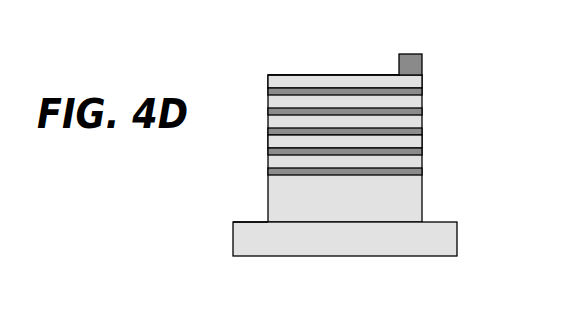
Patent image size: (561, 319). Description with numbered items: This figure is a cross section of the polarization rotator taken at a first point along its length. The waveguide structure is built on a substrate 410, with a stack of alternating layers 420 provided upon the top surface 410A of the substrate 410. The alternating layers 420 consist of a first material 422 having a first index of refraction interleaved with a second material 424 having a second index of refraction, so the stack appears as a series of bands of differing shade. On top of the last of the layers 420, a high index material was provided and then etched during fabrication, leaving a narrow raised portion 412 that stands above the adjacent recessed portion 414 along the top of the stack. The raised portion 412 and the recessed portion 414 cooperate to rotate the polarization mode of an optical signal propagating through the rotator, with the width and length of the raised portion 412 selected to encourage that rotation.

The substrate 410 is at (362, 248).
The top surface of substrate 410A is at (242, 222).
The raised portion 412 is at (409, 62).
The recessed portion 414 is at (281, 74).
The alternating layers 420 is at (429, 76).
The first material 422 is at (423, 151).
The second material 424 is at (423, 141).